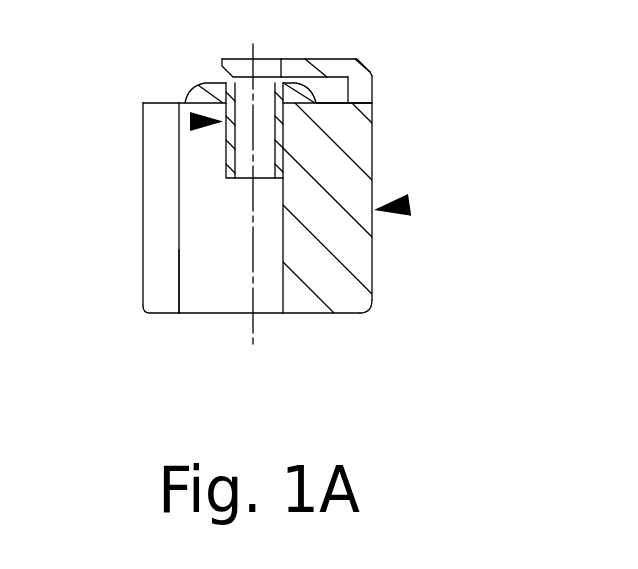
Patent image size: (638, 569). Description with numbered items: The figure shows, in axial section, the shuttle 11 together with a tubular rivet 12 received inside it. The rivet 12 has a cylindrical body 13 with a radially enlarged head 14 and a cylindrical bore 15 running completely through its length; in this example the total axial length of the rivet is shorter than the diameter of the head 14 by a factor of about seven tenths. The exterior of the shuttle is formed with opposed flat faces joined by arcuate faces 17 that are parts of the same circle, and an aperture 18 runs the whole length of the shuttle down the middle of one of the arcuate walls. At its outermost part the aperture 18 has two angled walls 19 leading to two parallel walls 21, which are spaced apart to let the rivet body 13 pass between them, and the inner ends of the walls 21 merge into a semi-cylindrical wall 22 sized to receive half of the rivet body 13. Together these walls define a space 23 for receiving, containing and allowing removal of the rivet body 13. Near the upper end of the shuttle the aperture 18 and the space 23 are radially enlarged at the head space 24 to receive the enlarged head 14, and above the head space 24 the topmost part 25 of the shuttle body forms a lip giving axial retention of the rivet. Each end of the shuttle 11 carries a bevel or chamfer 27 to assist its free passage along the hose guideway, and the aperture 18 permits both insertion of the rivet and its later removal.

The shuttle 11 is at (405, 205).
The tubular rivet 12 is at (192, 122).
The cylindrical body 13 is at (230, 160).
The radially enlarged head 14 is at (300, 97).
The cylindrical bore 15 is at (232, 152).
The arcuate face 17 is at (375, 258).
The aperture 18 is at (162, 298).
The angled wall 19 is at (155, 282).
The parallel wall 21 is at (199, 288).
The semi-cylindrical wall 22 is at (282, 292).
The space 23 is at (202, 229).
The head space 24 is at (340, 92).
The topmost part 25 is at (293, 68).
The bevel or chamfer 27 is at (370, 63).